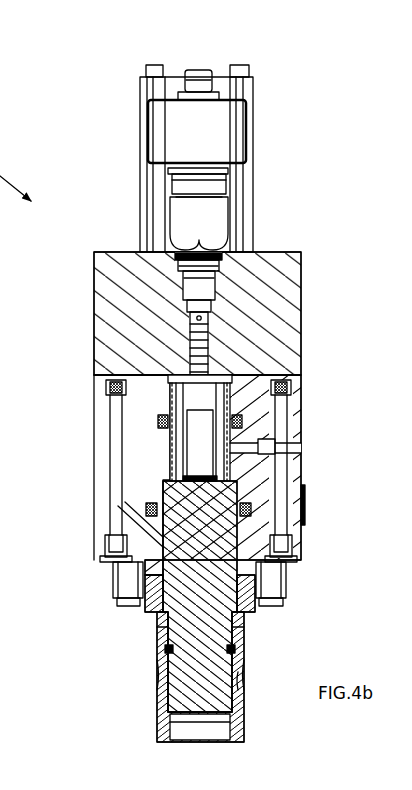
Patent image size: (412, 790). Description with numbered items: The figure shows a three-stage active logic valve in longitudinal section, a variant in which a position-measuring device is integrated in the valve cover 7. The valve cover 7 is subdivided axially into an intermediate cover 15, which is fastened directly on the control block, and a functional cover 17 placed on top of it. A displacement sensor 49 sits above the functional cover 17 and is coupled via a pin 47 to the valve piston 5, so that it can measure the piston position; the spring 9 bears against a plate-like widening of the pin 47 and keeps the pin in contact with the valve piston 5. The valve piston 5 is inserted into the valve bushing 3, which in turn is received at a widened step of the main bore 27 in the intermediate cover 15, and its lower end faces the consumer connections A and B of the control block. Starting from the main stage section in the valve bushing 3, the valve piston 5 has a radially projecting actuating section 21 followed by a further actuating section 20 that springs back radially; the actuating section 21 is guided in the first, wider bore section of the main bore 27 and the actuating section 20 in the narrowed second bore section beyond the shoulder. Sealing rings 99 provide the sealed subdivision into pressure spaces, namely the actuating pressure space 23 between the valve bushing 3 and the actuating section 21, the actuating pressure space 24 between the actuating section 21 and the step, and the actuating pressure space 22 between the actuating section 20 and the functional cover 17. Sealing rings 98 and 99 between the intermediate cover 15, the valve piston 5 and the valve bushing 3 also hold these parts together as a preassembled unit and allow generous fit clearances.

The displacement sensor 49 is at (233, 131).
The pin 47 is at (200, 345).
The functional cover 17 is at (114, 264).
The valve cover 7 is at (78, 329).
The actuating pressure space 22 is at (112, 388).
The spring 9 is at (285, 392).
The sealing rings 99 is at (240, 420).
The intermediate cover 15 is at (98, 419).
The actuating section 20 is at (105, 436).
The actuating pressure space 24 is at (172, 455).
The main bore 27 is at (162, 470).
The actuating section 21 is at (125, 528).
The actuating pressure space 23 is at (130, 572).
The valve bushing 3 is at (158, 642).
The sealing rings 98 is at (240, 652).
The valve piston 5 is at (180, 680).
The consumer connection B is at (240, 698).
The consumer connection A is at (232, 746).